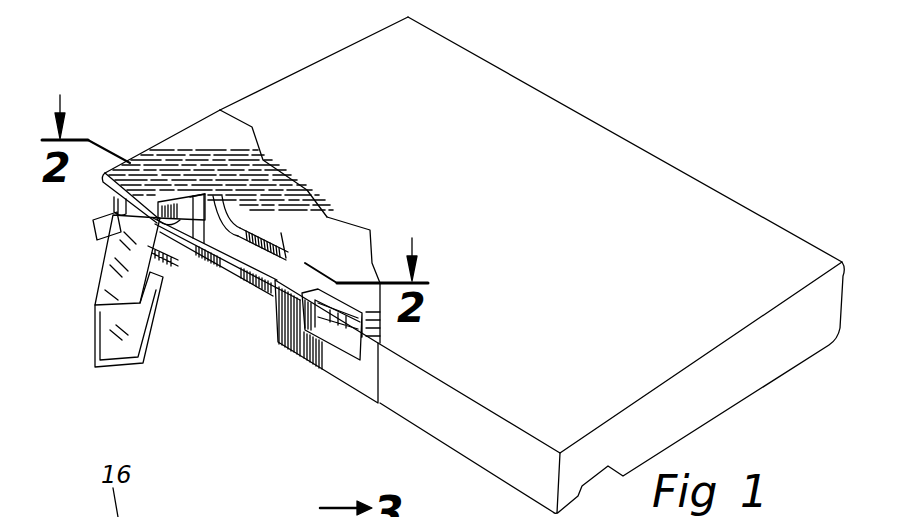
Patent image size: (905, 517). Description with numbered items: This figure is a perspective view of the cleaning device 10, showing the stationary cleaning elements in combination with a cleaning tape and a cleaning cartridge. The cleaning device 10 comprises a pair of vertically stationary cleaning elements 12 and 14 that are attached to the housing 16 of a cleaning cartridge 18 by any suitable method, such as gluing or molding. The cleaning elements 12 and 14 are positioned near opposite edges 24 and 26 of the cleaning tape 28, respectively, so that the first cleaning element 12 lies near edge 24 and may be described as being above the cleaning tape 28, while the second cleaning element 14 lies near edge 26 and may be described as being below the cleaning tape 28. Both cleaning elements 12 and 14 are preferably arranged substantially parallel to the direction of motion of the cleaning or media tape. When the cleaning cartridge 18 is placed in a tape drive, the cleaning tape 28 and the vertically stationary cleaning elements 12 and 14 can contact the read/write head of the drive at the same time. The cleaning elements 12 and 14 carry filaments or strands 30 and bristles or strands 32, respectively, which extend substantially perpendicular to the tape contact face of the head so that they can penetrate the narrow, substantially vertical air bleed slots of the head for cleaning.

The cleaning device 10 is at (183, 83).
The vertically stationary cleaning element 12 is at (289, 258).
The vertically stationary cleaning element 14 is at (331, 218).
The housing 16 is at (304, 66).
The cleaning cartridge 18 is at (162, 117).
The edge of cleaning tape 24 is at (218, 203).
The edge of cleaning tape 26 is at (201, 252).
The cleaning tape 28 is at (229, 277).
The filaments or strands 30 is at (279, 220).
The bristles or strands 32 is at (229, 231).